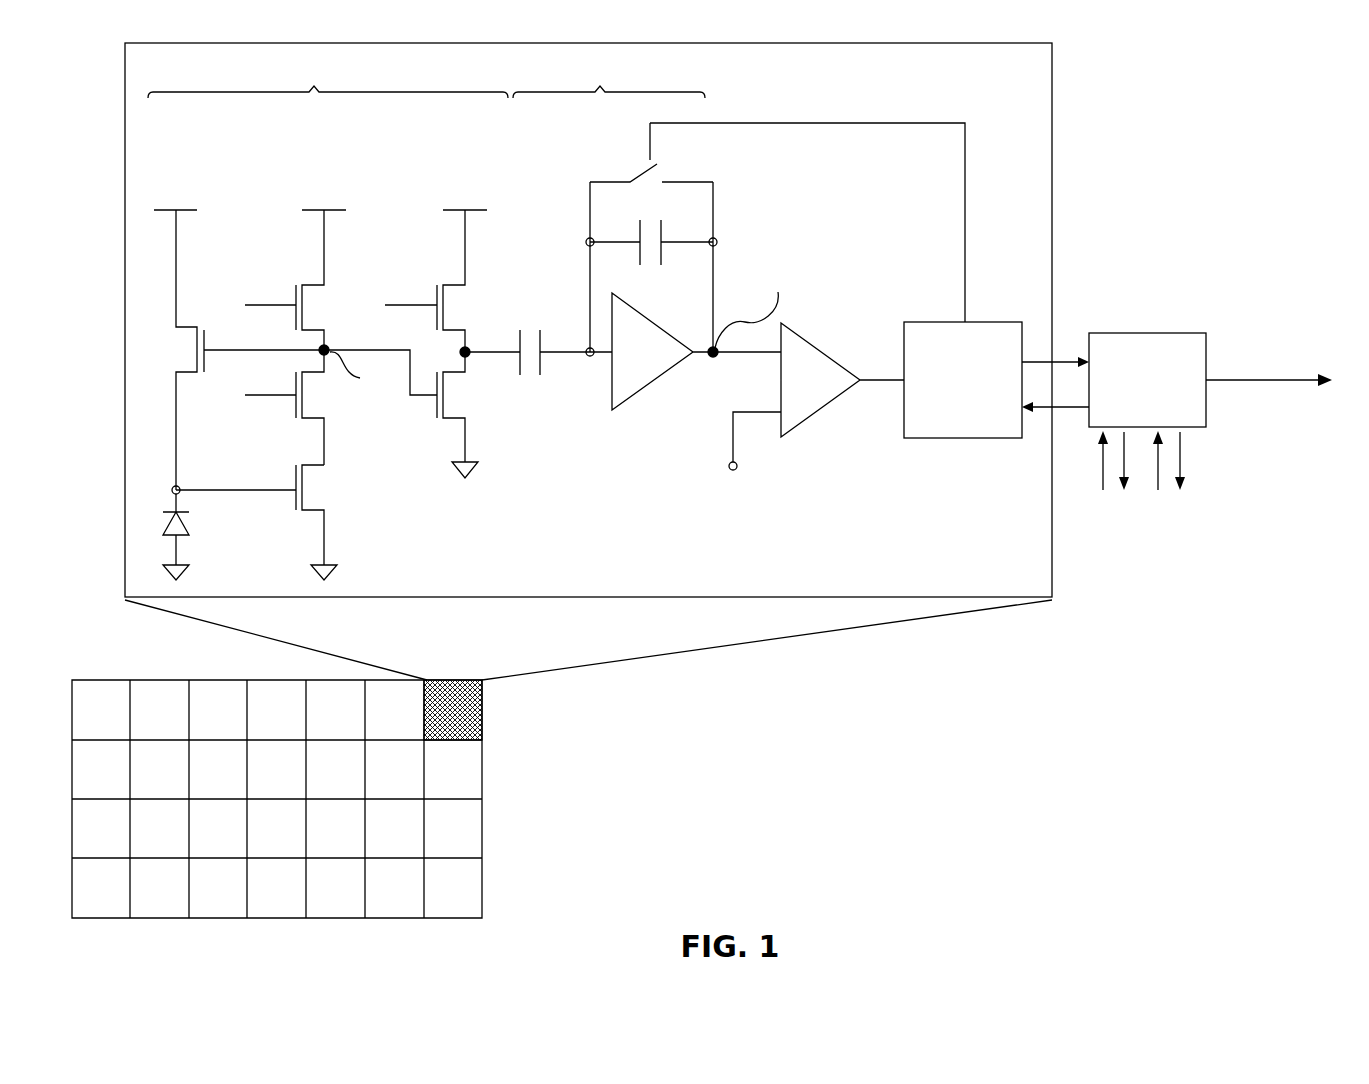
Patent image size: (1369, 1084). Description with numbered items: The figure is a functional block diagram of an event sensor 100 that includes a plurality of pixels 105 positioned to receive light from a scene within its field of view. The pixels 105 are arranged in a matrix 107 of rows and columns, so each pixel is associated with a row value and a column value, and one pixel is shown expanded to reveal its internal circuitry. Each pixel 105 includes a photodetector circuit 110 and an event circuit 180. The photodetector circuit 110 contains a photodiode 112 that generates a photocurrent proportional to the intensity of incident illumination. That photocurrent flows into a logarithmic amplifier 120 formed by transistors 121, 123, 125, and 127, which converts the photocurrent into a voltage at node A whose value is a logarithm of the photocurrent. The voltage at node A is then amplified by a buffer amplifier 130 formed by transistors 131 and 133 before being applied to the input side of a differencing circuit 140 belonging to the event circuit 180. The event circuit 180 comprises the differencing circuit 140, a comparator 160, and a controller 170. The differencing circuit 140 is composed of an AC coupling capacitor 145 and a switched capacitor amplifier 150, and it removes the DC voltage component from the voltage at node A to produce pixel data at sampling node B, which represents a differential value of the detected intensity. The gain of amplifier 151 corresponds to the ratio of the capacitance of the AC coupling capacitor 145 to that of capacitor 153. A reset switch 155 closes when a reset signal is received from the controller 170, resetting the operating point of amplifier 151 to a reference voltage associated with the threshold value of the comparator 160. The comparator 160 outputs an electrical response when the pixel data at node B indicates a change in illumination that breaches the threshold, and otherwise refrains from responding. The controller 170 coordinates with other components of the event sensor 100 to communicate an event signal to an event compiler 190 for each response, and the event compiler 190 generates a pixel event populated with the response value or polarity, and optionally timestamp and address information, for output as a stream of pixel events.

The event sensor 100 is at (1193, 84).
The pixel 105 is at (569, 470).
The matrix 107 is at (482, 857).
The photodetector circuit 110 is at (328, 79).
The photodiode 112 is at (186, 525).
The logarithmic amplifier 120 is at (256, 246).
The transistor 121 is at (239, 350).
The transistor 123 is at (287, 280).
The transistor 125 is at (333, 405).
The transistor 127 is at (258, 522).
The buffer amplifier 130 is at (494, 260).
The transistor 131 is at (428, 281).
The transistor 133 is at (459, 412).
The differencing circuit 140 is at (609, 79).
The AC coupling capacitor 145 is at (541, 376).
The switched capacitor amplifier 150 is at (621, 434).
The amplifier 151 is at (698, 338).
The capacitor 153 is at (663, 258).
The reset switch 155 is at (648, 172).
The comparator 160 is at (810, 411).
The controller 170 is at (996, 380).
The event circuit 180 is at (785, 522).
The event compiler 190 is at (1210, 411).